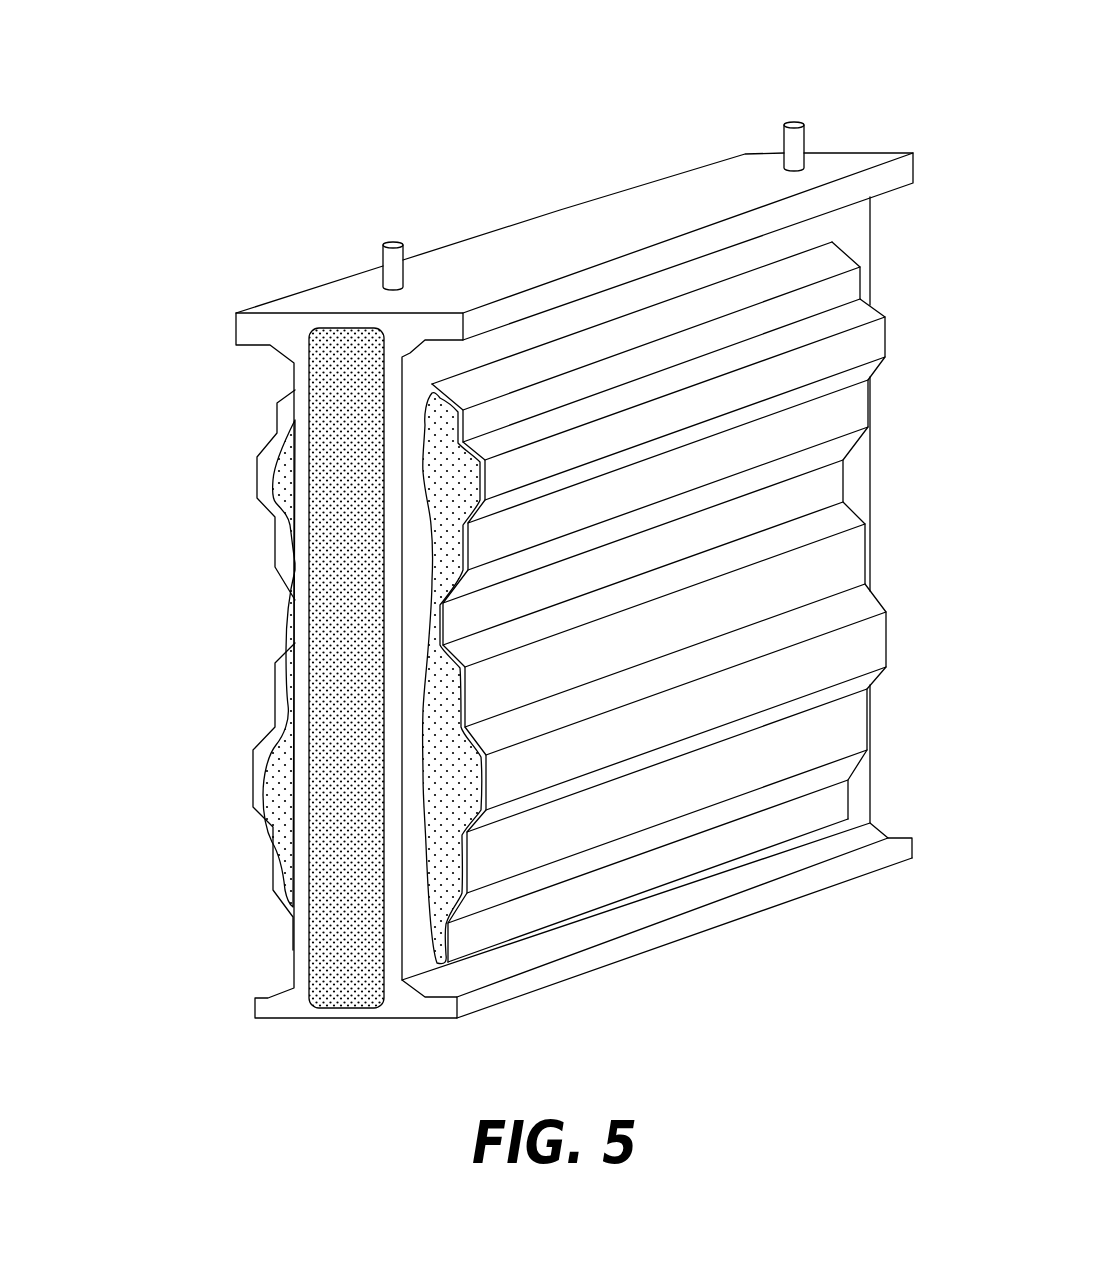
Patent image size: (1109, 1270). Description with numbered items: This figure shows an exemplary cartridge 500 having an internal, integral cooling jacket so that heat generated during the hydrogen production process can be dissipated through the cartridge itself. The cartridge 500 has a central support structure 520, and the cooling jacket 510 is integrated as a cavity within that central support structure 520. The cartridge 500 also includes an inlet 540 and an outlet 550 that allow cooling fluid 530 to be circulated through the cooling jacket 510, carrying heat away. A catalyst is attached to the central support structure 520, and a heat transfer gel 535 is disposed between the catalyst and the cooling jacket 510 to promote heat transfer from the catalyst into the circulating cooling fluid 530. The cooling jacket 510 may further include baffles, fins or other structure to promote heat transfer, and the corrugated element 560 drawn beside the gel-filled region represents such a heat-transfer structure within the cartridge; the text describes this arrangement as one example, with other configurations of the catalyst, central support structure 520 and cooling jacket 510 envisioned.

The cartridge 500 is at (552, 61).
The cooling jacket 510 is at (308, 382).
The central support structure 520 is at (563, 218).
The cooling fluid 530 is at (343, 447).
The heat transfer gel 535 is at (432, 416).
The inlet 540 is at (383, 257).
The outlet 550 is at (797, 138).
The corrugated fin 560 is at (880, 343).